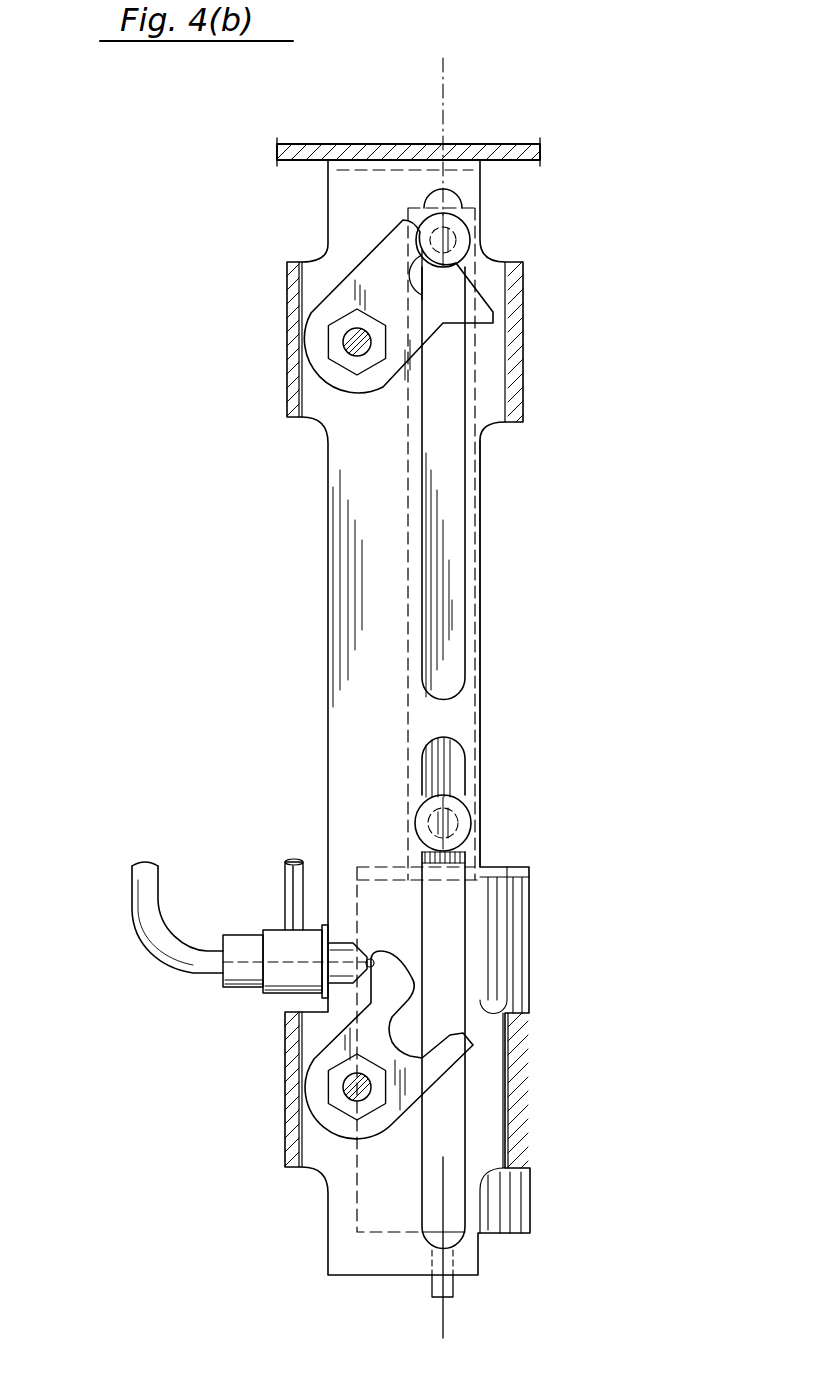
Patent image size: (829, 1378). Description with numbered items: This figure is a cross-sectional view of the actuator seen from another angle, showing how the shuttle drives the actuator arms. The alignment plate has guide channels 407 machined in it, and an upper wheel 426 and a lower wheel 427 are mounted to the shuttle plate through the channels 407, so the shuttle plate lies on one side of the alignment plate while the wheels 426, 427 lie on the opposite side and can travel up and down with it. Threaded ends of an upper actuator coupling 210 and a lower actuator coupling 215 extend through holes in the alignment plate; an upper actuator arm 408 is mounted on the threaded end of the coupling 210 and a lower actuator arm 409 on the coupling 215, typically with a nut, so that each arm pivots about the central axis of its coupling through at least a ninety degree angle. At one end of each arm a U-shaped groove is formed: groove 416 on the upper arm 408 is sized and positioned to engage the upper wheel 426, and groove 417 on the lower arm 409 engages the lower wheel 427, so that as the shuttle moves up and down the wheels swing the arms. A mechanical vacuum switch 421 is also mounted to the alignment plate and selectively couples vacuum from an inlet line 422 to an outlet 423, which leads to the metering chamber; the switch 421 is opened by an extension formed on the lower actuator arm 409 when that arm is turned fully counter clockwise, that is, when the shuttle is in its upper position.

The guide channels 407 is at (447, 520).
The upper actuator arm 408 is at (473, 333).
The lower actuator arm 409 is at (447, 1055).
The U-shaped groove 416 is at (444, 281).
The U-shaped groove 417 is at (436, 1014).
The upper wheel 426 is at (472, 233).
The lower wheel 427 is at (462, 826).
The upper actuator coupling 210 is at (345, 340).
The lower actuator coupling 215 is at (343, 1087).
The mechanical vacuum switch 421 is at (277, 995).
The inlet line 422 is at (287, 878).
The outlet 423 is at (157, 940).